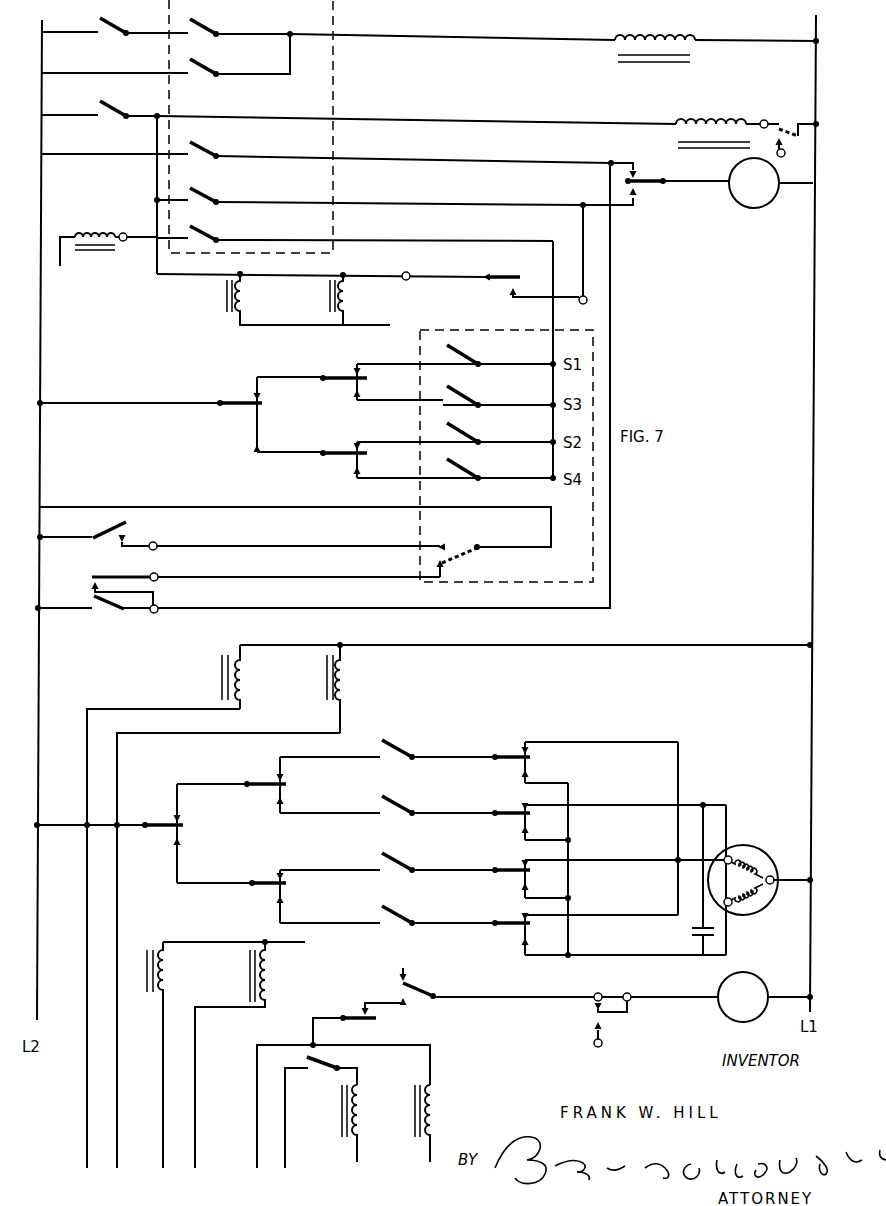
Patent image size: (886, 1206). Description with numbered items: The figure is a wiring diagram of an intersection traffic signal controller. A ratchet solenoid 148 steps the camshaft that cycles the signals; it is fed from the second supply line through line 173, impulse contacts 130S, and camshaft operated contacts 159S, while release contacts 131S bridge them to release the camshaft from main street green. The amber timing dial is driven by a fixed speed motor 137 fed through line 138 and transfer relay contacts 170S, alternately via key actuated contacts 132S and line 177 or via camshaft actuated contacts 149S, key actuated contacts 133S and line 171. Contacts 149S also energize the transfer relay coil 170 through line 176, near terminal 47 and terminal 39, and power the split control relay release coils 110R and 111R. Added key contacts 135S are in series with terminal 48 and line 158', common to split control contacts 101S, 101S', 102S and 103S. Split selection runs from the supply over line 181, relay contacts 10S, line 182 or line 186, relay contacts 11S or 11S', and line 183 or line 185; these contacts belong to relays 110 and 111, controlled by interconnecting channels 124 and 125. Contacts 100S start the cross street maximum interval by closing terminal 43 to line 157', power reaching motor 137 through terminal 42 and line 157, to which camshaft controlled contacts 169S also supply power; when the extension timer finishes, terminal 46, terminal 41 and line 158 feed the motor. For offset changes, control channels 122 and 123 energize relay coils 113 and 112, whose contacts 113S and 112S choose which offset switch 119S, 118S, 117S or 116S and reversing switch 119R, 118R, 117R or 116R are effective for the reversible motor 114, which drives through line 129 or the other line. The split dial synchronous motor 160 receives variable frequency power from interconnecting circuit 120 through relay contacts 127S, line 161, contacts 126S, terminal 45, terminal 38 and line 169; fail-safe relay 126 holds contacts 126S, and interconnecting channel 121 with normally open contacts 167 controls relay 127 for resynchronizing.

The camshaft operated contacts 159S is at (96, 21).
The impulse contacts 130S is at (200, 30).
The release contacts 131S is at (200, 72).
The line 173 is at (465, 36).
The ratchet solenoid 148 is at (668, 36).
The camshaft actuated contacts 149S is at (112, 114).
The line 176 is at (472, 120).
The transfer relay coil 170 is at (713, 120).
The terminal 47 is at (764, 119).
The terminal 39 is at (792, 82).
The key actuated contacts 132S is at (204, 158).
The line 177 is at (472, 162).
The key actuated contacts 133S is at (204, 200).
The line 171 is at (472, 204).
The transfer relay contacts 170S is at (644, 191).
The line 138 is at (718, 181).
The fixed speed motor 137 is at (772, 213).
The terminal 48 is at (86, 223).
The key actuated contacts 135S is at (204, 240).
The line 158' is at (384, 348).
The line 158 is at (564, 250).
The terminal 46 is at (406, 272).
The terminal 41 is at (584, 305).
The split control relay release coil 110R is at (252, 316).
The split control relay release coil 111R is at (354, 316).
The line 181 is at (94, 396).
The relay contacts 10S is at (242, 396).
The line 182 is at (296, 364).
The line 186 is at (312, 452).
The relay contacts 11S is at (343, 373).
The line 183 is at (376, 362).
The line 185 is at (376, 400).
The relay contacts 11S' is at (381, 451).
The split control contacts 103S is at (470, 361).
The split control contacts 102S is at (470, 401).
The split control contacts 101S is at (499, 430).
The cam actuated contacts 101S' is at (499, 466).
The line 157' is at (295, 514).
The contacts 100S is at (470, 559).
The line 157 is at (384, 385).
The terminal 43 is at (156, 572).
The terminal 42 is at (164, 607).
The camshaft controlled contacts 169S is at (108, 616).
The relay 110 is at (250, 700).
The relay 111 is at (350, 700).
The interconnecting channel 124 is at (171, 710).
The interconnecting channel 125 is at (196, 737).
The contacts 113S is at (158, 823).
The contacts 112S is at (262, 784).
The offset switch 119S is at (408, 755).
The reversing switch 119R is at (508, 756).
The offset switch 118S is at (408, 812).
The reversing switch 118R is at (508, 812).
The offset switch 117S is at (408, 869).
The reversing switch 117R is at (508, 869).
The offset switch 116S is at (408, 922).
The reversing switch 116R is at (508, 922).
The line 129 is at (692, 806).
The reversible motor 114 is at (750, 848).
The synchronous motor 160 is at (766, 984).
The line 169 is at (692, 995).
The terminal 38 is at (627, 992).
The terminal 45 is at (597, 992).
The relay coil 113 is at (172, 958).
The relay coil 112 is at (274, 958).
The control channel 122 is at (166, 1172).
The control channel 123 is at (198, 1172).
The interconnecting circuit 120 is at (260, 1172).
The interconnecting channel 121 is at (288, 1172).
The normally open contacts 167 is at (292, 1108).
The relay 127 is at (366, 1122).
The fail-safe relay 126 is at (440, 1118).
The relay contacts 127S is at (352, 1012).
The line 161 is at (388, 1008).
The relay contacts 126S is at (436, 990).